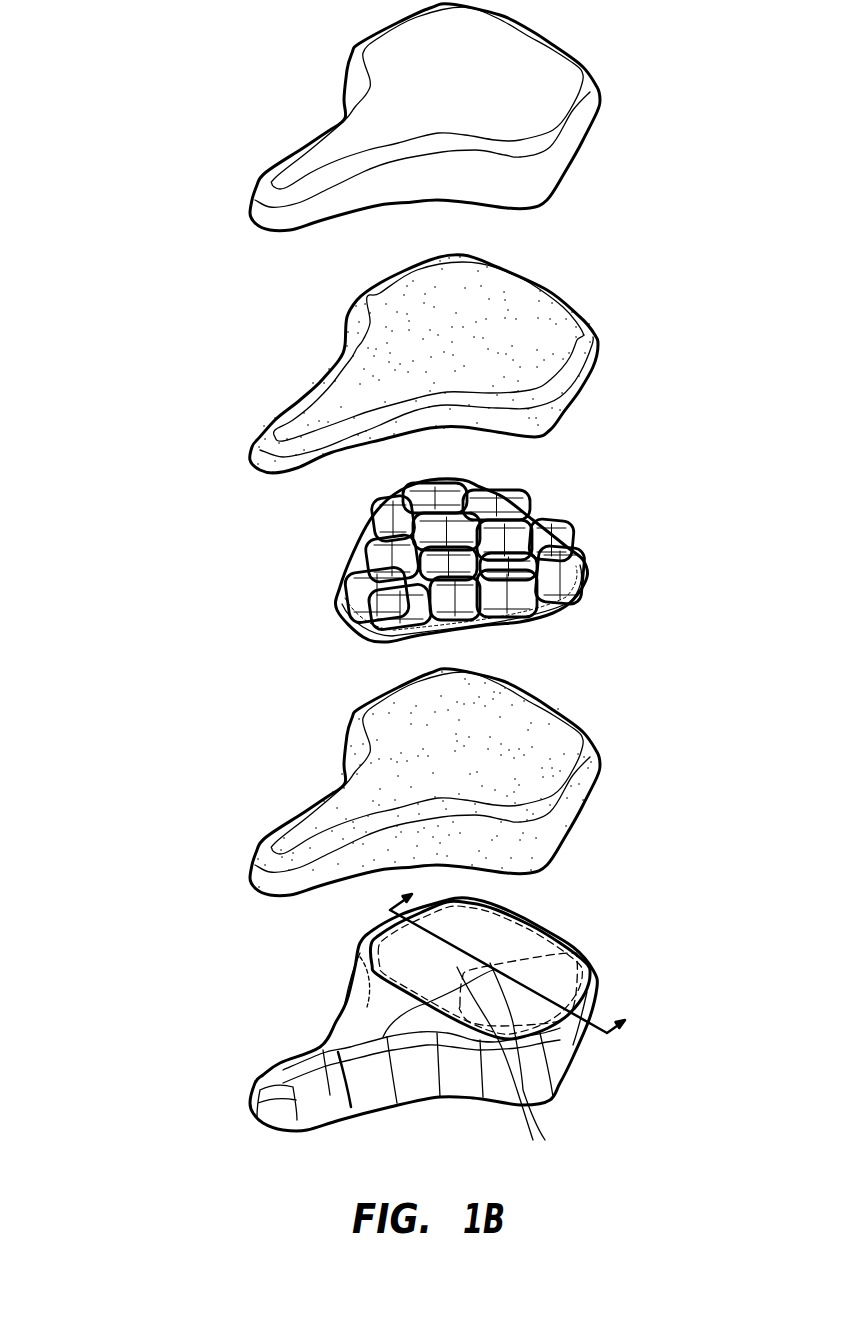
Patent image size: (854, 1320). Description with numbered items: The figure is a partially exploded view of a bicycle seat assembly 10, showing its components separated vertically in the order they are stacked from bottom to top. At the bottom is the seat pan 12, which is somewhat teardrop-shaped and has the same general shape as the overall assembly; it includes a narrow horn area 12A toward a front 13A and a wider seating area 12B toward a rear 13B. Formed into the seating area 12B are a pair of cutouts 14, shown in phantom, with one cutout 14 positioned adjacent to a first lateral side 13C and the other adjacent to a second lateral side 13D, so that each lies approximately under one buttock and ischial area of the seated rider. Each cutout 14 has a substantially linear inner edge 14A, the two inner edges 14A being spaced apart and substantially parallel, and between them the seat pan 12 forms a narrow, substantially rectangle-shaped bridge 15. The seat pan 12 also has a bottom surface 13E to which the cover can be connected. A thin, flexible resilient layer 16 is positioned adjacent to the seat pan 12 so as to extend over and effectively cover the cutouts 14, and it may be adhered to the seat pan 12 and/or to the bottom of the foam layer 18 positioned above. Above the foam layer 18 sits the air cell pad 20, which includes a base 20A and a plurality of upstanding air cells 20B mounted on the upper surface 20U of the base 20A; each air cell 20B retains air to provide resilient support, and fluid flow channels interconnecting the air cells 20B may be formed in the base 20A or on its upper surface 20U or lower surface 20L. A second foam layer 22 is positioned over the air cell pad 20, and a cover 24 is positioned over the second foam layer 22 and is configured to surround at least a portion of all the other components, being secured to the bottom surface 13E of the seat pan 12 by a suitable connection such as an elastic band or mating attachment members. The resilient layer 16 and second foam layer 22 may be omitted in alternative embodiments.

The bicycle seat assembly 10 is at (140, 137).
The cover 24 is at (562, 84).
The second foam layer 22 is at (562, 336).
The air cell pad 20 is at (476, 580).
The base 20A is at (352, 612).
The air cells 20B is at (368, 543).
The upper surface 20U is at (575, 600).
The lower surface 20L is at (553, 610).
The foam layer 18 is at (483, 782).
The seat pan 12 is at (440, 1021).
The horn area 12A is at (293, 1072).
The seating area 12B is at (560, 1053).
The front 13A is at (250, 1107).
The rear 13B is at (528, 928).
The first lateral side 13C is at (373, 933).
The second lateral side 13D is at (562, 1080).
The bottom surface 13E is at (427, 1097).
The cutouts 14 is at (570, 962).
The inner edge 14A is at (511, 1066).
The bridge 15 is at (550, 945).
The resilient layer 16 is at (387, 1103).